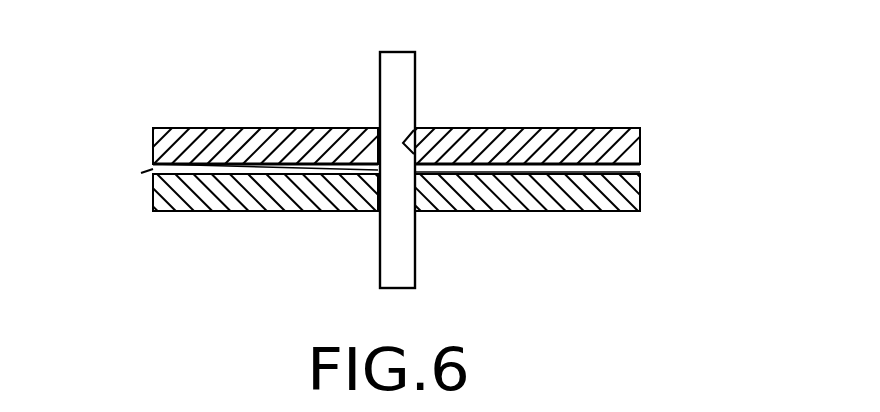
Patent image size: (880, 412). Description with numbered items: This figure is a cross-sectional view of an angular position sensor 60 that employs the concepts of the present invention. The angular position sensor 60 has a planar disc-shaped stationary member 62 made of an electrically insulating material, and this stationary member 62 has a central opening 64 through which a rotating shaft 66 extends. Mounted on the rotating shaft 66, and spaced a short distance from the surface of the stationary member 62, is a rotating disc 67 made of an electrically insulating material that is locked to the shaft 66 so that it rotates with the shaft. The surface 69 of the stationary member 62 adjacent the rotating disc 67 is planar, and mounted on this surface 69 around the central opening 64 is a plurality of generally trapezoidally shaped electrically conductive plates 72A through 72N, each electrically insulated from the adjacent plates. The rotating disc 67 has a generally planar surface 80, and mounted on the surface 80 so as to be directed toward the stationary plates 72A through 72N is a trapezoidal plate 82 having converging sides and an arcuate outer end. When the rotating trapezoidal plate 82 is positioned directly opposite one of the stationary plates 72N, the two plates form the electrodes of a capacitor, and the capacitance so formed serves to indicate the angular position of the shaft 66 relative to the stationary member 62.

The angular position sensor 60 is at (397, 148).
The stationary member 62 is at (650, 143).
The central opening 64 is at (414, 130).
The rotating shaft 66 is at (380, 77).
The rotating disc 67 is at (650, 199).
The surface of the stationary member 69 is at (255, 163).
The electrically conductive plate 72A is at (206, 168).
The electrically conductive plate 72N is at (587, 177).
The planar surface 80 is at (552, 180).
The trapezoidal plate 82 is at (125, 221).